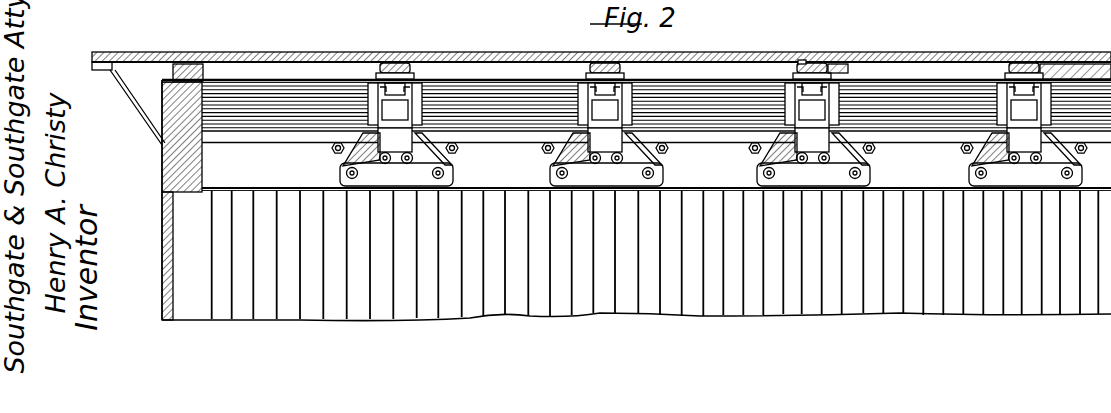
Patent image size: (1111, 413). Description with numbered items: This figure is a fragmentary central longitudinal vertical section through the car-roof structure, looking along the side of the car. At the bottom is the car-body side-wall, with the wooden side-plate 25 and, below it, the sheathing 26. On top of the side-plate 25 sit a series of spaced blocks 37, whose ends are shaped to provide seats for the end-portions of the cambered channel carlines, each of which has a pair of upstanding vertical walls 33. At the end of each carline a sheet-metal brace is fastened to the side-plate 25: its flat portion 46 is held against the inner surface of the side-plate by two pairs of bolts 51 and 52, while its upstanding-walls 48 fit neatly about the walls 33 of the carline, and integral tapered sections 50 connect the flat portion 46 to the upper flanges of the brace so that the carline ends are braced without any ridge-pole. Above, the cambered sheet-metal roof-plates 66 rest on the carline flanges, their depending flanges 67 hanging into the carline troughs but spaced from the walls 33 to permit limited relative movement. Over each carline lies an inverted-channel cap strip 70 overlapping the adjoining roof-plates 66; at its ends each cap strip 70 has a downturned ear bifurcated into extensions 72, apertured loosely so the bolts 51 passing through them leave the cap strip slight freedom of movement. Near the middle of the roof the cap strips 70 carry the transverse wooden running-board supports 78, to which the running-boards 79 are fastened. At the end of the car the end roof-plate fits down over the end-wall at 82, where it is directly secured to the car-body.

The side-plate 25 is at (656, 168).
The sheathing 26 is at (622, 316).
The upstanding vertical walls 33 is at (709, 105).
The blocks 37 is at (498, 136).
The flat portion 46 is at (814, 160).
The upstanding-walls 48 is at (709, 140).
The tapered sections 50 is at (436, 146).
The bolts 51 is at (405, 162).
The bolts 52 is at (353, 179).
The roof-plate 66 is at (497, 80).
The depending flanges 67 is at (416, 83).
The cap strip 70 is at (400, 63).
The extensions 72 is at (390, 64).
The running-board supports 78 is at (840, 70).
The running-boards 79 is at (800, 61).
The end-wall attachment 82 is at (170, 90).